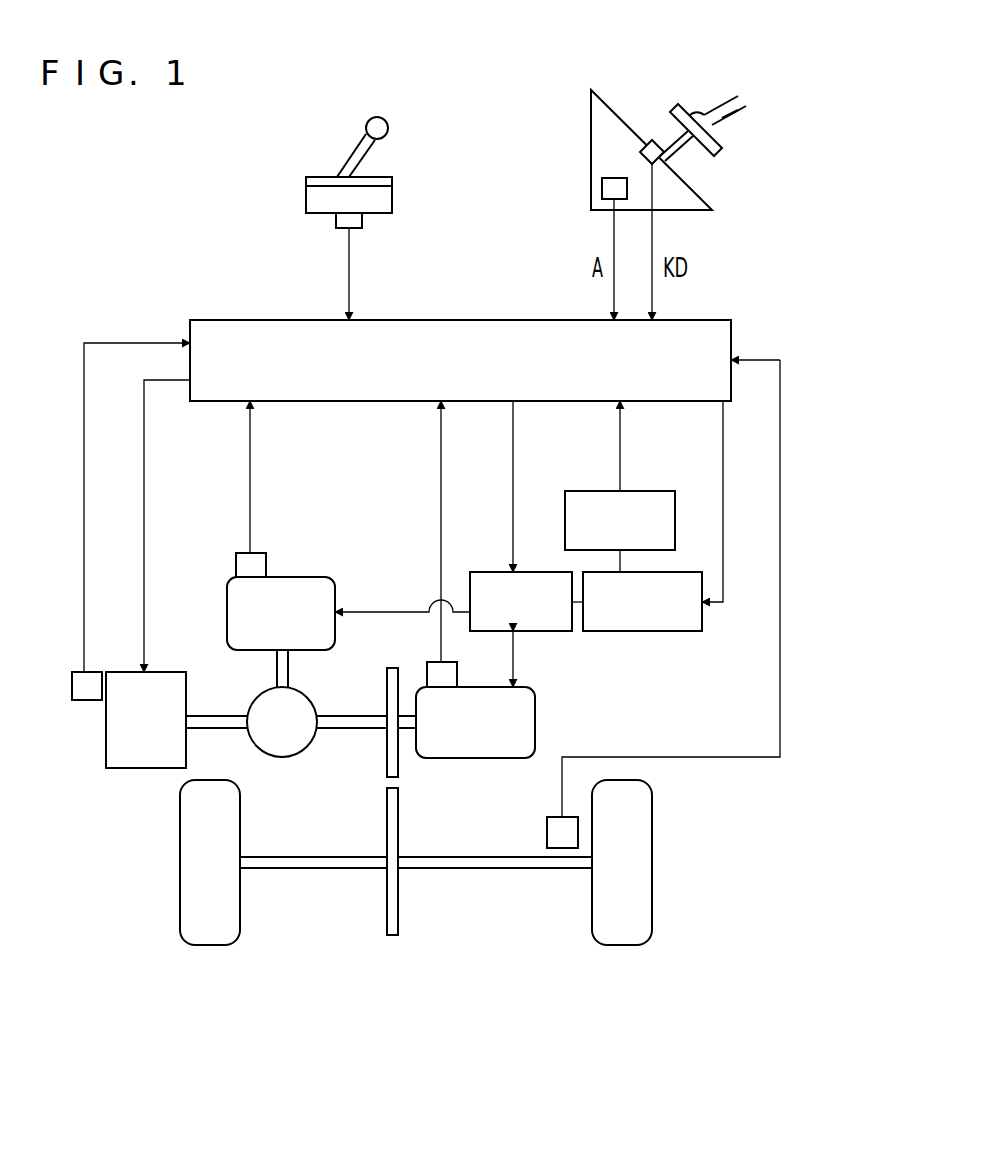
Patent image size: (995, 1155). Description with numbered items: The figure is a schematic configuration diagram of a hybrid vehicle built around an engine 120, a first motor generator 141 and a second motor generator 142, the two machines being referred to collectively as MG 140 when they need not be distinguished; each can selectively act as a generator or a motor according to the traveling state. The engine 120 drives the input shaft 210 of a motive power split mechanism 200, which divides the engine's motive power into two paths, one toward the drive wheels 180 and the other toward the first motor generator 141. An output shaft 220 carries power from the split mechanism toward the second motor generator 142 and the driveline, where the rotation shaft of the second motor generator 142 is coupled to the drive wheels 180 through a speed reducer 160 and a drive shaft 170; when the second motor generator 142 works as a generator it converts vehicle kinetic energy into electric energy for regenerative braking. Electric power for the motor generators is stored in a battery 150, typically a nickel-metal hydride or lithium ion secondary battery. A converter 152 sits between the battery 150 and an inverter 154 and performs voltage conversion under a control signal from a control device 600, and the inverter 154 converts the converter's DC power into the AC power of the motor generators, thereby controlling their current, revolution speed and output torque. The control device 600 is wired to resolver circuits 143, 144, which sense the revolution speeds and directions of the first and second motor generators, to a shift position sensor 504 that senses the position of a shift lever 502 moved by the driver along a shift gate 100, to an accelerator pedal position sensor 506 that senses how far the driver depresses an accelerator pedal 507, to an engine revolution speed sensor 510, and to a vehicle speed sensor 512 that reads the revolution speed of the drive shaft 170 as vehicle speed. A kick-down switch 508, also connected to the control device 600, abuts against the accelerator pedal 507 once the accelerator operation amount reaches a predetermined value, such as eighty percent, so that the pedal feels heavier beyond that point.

The shift gate 100 is at (395, 180).
The shift lever 502 is at (388, 122).
The shift position sensor 504 is at (364, 223).
The accelerator pedal position sensor 506 is at (602, 190).
The accelerator pedal 507 is at (716, 152).
The kick-down switch 508 is at (651, 140).
The control device 600 is at (462, 320).
The engine revolution speed sensor 510 is at (82, 702).
The vehicle speed sensor 512 is at (547, 835).
The engine 120 is at (132, 770).
The motor generator 140 is at (446, 635).
The first motor generator 141 is at (305, 577).
The second motor generator 142 is at (535, 718).
The resolver circuit 143 is at (236, 562).
The resolver circuit 144 is at (430, 662).
The battery 150 is at (640, 491).
The converter 152 is at (625, 631).
The inverter 154 is at (493, 572).
The speed reducer 160 is at (393, 937).
The drive shaft 170 is at (312, 870).
The drive wheels 180 is at (210, 947).
The motive power split mechanism 200 is at (283, 757).
The input shaft 210 is at (228, 712).
The output shaft 220 is at (350, 730).